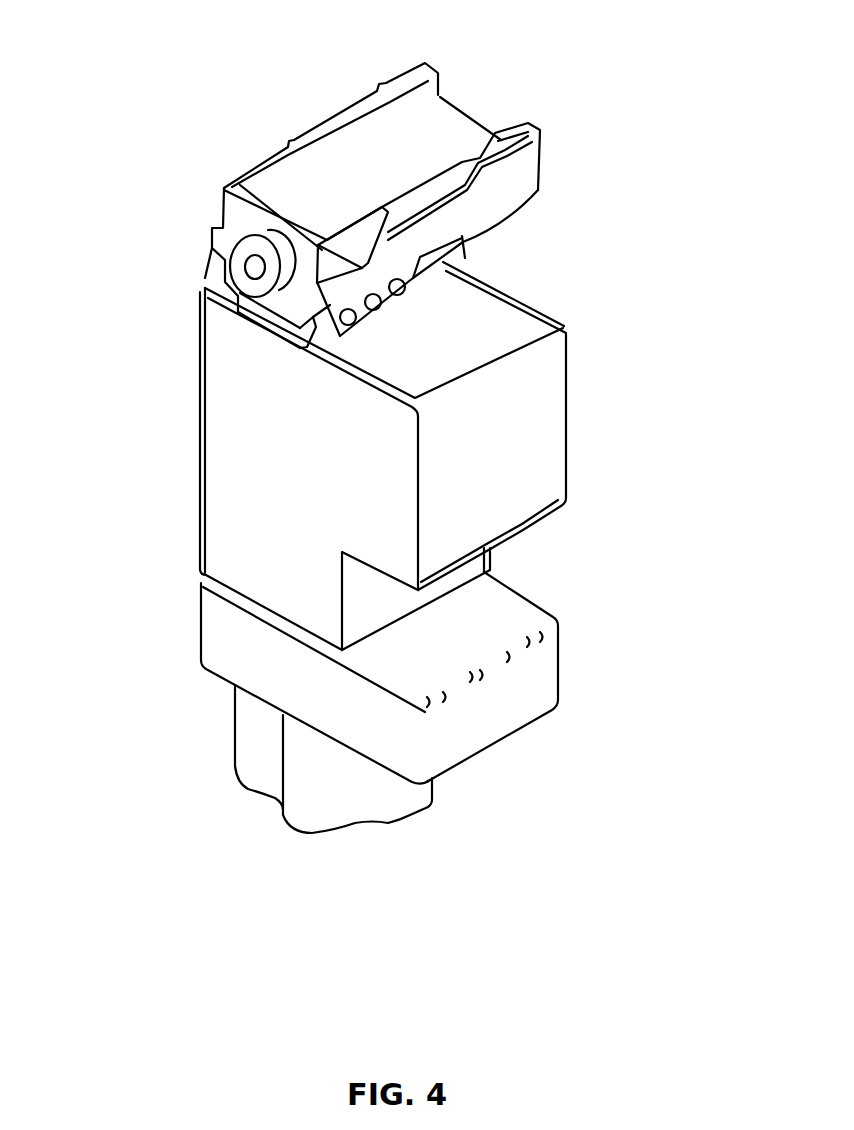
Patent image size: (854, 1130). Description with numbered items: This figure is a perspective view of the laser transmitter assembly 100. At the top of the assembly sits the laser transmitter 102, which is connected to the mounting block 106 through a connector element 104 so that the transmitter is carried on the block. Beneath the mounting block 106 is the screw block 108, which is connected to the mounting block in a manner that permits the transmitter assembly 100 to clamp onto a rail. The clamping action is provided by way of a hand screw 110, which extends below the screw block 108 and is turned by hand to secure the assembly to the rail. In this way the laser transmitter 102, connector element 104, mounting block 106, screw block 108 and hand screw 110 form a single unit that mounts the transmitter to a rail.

The laser transmitter assembly 100 is at (259, 89).
The laser transmitter 102 is at (412, 155).
The connector element 104 is at (465, 250).
The mounting block 106 is at (530, 449).
The screw block 108 is at (490, 698).
The hand screw 110 is at (398, 797).